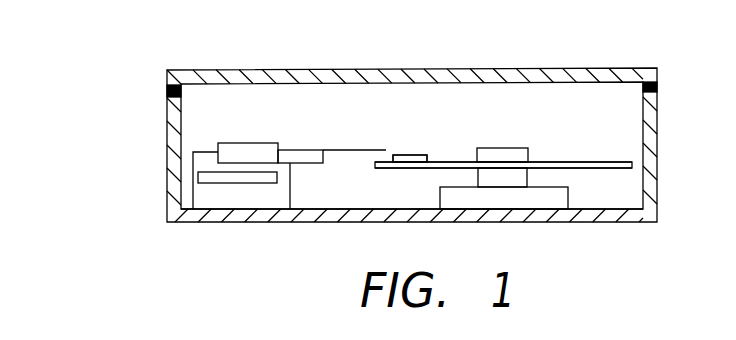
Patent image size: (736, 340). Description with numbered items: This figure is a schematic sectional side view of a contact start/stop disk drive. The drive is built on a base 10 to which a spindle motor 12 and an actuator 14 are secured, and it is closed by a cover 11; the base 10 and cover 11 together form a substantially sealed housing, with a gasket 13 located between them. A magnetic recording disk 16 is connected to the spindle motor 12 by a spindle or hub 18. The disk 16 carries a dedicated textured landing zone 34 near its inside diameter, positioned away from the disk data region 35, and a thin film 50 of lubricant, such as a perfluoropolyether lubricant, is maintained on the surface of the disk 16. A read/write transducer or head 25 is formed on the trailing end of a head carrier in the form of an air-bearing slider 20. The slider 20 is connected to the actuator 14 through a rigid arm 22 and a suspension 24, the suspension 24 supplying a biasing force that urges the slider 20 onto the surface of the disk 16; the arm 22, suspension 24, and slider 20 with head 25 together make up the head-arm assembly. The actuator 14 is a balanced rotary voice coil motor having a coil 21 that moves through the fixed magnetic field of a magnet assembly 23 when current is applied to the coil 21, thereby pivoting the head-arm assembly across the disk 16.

The base 10 is at (598, 212).
The cover 11 is at (191, 78).
The spindle motor 12 is at (521, 204).
The gasket 13 is at (658, 87).
The actuator 14 is at (236, 204).
The magnetic recording disk 16 is at (658, 159).
The spindle or hub 18 is at (500, 148).
The air-bearing slider 20 is at (422, 157).
The coil 21 is at (230, 152).
The rigid arm 22 is at (298, 156).
The magnet assembly 23 is at (203, 178).
The suspension 24 is at (335, 149).
The read/write transducer or head 25 is at (400, 155).
The textured landing zone 34 is at (553, 163).
The disk data region 35 is at (584, 166).
The thin film of lubricant 50 is at (602, 161).